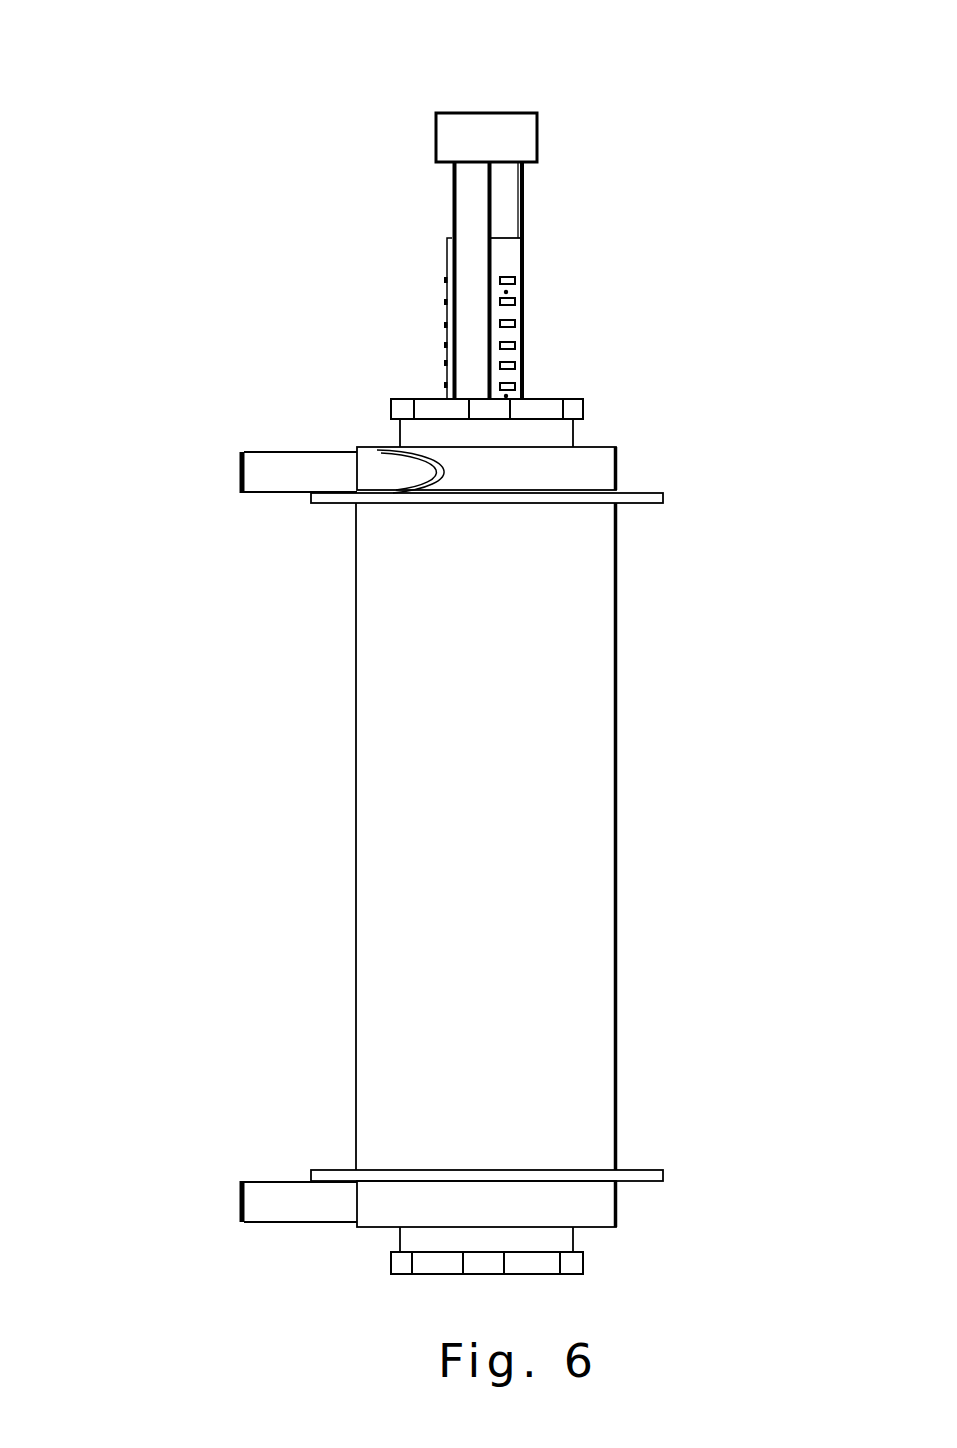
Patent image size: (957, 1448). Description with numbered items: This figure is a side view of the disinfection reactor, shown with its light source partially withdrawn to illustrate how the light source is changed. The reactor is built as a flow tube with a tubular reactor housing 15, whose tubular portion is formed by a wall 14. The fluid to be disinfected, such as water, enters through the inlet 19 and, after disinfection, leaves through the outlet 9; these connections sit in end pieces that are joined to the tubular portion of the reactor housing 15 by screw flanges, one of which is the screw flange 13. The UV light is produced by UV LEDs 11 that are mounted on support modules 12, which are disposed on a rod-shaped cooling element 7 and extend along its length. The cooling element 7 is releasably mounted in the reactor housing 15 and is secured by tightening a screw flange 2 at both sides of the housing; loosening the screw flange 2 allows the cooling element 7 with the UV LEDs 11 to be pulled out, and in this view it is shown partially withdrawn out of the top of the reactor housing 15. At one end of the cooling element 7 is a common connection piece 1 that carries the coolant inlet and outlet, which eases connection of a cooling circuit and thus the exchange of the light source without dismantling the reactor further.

The connection piece 1 is at (472, 127).
The cooling element 7 is at (502, 221).
The UV LEDs 11 is at (497, 312).
The support modules 12 is at (500, 363).
The inlet 19 is at (293, 478).
The wall 14 is at (357, 827).
The reactor housing 15 is at (532, 974).
The screw flange 13 is at (650, 1168).
The outlet 9 is at (268, 1200).
The screw flange 2 is at (583, 1260).